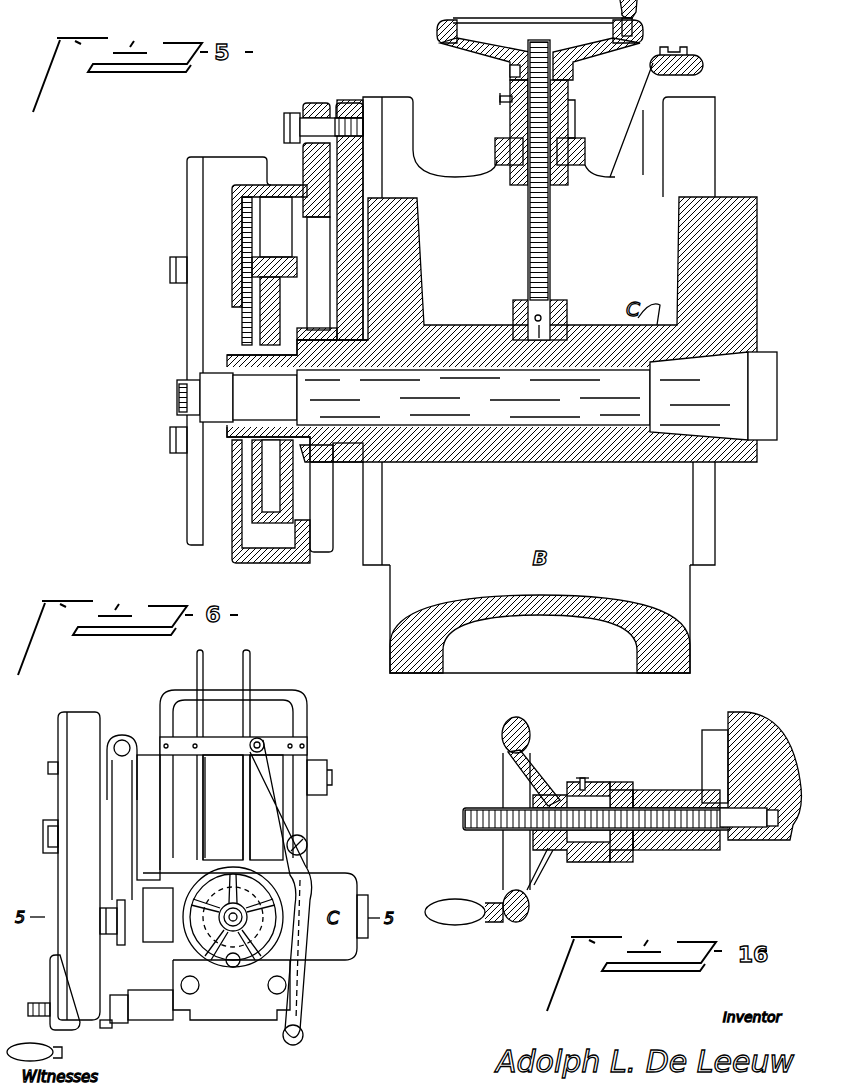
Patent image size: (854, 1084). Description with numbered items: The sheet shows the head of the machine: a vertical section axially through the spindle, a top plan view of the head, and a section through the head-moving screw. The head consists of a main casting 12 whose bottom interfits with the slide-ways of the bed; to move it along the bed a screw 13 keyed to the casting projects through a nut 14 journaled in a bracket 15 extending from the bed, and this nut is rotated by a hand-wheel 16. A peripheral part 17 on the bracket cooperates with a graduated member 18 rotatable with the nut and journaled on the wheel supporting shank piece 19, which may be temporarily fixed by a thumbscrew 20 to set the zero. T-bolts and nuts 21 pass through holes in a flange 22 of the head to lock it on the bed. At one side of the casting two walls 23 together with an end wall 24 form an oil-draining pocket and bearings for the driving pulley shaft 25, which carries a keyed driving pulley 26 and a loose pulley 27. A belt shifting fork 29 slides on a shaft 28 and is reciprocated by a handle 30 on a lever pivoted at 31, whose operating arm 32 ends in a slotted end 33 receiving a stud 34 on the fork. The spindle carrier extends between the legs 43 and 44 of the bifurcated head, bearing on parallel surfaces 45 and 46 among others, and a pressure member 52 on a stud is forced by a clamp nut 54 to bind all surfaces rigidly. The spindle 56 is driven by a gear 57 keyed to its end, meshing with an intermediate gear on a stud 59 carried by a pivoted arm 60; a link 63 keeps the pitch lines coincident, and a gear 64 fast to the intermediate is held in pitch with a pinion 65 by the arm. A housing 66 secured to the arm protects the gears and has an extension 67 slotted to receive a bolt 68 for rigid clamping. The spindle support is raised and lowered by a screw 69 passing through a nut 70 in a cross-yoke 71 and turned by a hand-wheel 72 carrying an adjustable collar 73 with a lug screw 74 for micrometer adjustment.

In FIG. 5, the pinion 65 is at (192, 210).
In FIG. 5, the gear 64 is at (241, 328).
In FIG. 5, the gear 57 is at (276, 250).
In FIG. 5, the arm 60 is at (308, 296).
In FIG. 6, the arm 60 is at (121, 817).
In FIG. 5, the link 63 is at (301, 331).
In FIG. 5, the extension 67 is at (330, 103).
In FIG. 6, the extension 67 is at (120, 962).
In FIG. 5, the bolt 68 is at (284, 127).
In FIG. 6, the bolt 68 is at (102, 929).
In FIG. 5, the leg 43 is at (405, 133).
In FIG. 6, the leg 43 is at (180, 882).
In FIG. 5, the hand-wheel 72 is at (640, 36).
In FIG. 6, the hand-wheel 72 is at (240, 1012).
In FIG. 5, the adjustable collar 73 is at (510, 87).
In FIG. 5, the lug screw 74 is at (500, 101).
In FIG. 5, the nut 70 is at (568, 128).
In FIG. 5, the cross-yoke 71 is at (500, 170).
In FIG. 5, the screw 69 is at (551, 252).
In FIG. 6, the screw 69 is at (228, 932).
In FIG. 5, the operating arm 32 is at (660, 130).
In FIG. 6, the operating arm 32 is at (275, 800).
In FIG. 5, the pivot 31 is at (686, 57).
In FIG. 6, the pivot 31 is at (307, 843).
In FIG. 5, the spindle 56 is at (772, 388).
In FIG. 6, the spindle 56 is at (368, 908).
In FIG. 5, the clamp nut 54 is at (316, 463).
In FIG. 5, the pressure member 52 is at (345, 463).
In FIG. 6, the pressure member 52 is at (140, 850).
In FIG. 5, the bearing surface 45 is at (375, 500).
In FIG. 5, the bearing surface 46 is at (700, 508).
In FIG. 6, the end wall 24 is at (218, 700).
In FIG. 6, the shaft 28 is at (297, 740).
In FIG. 6, the walls 23 is at (307, 755).
In FIG. 6, the belt shifting fork 29 is at (233, 745).
In FIG. 6, the slotted end 33 is at (259, 738).
In FIG. 6, the stud 34 is at (248, 758).
In FIG. 6, the driving pulley 26 is at (216, 807).
In FIG. 6, the loose pulley 27 is at (266, 807).
In FIG. 6, the driving pulley shaft 25 is at (330, 780).
In FIG. 6, the handle 30 is at (303, 1035).
In FIG. 6, the housing 66 is at (70, 803).
In FIG. 6, the stud 59 is at (43, 845).
In FIG. 6, the leg 44 is at (275, 955).
In FIG. 6, the flange 22 is at (231, 995).
In FIG. 6, the T-bolts and nuts 21 is at (193, 996).
In FIG. 6, the main casting 12 is at (163, 1022).
In FIG. 16, the main casting 12 is at (770, 742).
In FIG. 6, the bracket 15 is at (135, 1024).
In FIG. 16, the bracket 15 is at (665, 790).
In FIG. 6, the peripheral part 17 is at (106, 1030).
In FIG. 16, the peripheral part 17 is at (623, 862).
In FIG. 6, the member 18 is at (95, 1022).
In FIG. 16, the member 18 is at (592, 850).
In FIG. 6, the screw 13 is at (36, 1016).
In FIG. 16, the screw 13 is at (730, 830).
In FIG. 6, the hand-wheel 16 is at (52, 1055).
In FIG. 16, the hand-wheel 16 is at (530, 738).
In FIG. 16, the shank piece 19 is at (572, 795).
In FIG. 16, the thumbscrew 20 is at (585, 783).
In FIG. 16, the nut 14 is at (692, 850).